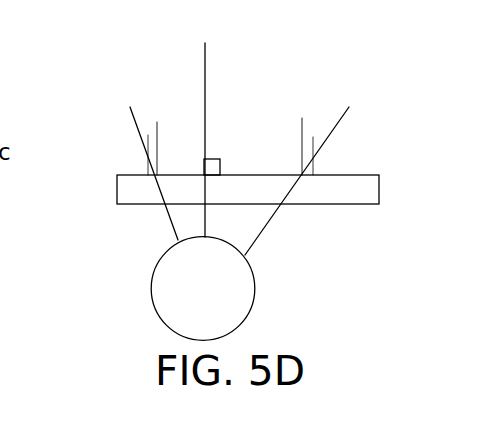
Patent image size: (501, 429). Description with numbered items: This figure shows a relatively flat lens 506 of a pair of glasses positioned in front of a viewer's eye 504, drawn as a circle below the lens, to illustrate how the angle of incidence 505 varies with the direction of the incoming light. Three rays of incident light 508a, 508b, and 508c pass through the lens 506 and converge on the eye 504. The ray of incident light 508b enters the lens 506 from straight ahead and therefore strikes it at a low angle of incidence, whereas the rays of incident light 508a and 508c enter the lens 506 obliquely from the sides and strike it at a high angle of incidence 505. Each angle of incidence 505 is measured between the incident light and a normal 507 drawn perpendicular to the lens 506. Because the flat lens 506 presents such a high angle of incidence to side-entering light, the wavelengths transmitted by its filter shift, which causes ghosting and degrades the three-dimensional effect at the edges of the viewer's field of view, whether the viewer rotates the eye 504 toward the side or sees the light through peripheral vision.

The eye 504 is at (153, 312).
The angle of incidence 505 is at (148, 135).
The lens 506 is at (110, 205).
The normal 507 is at (160, 140).
The incident light 508a is at (123, 173).
The incident light 508b is at (194, 127).
The incident light 508c is at (319, 168).